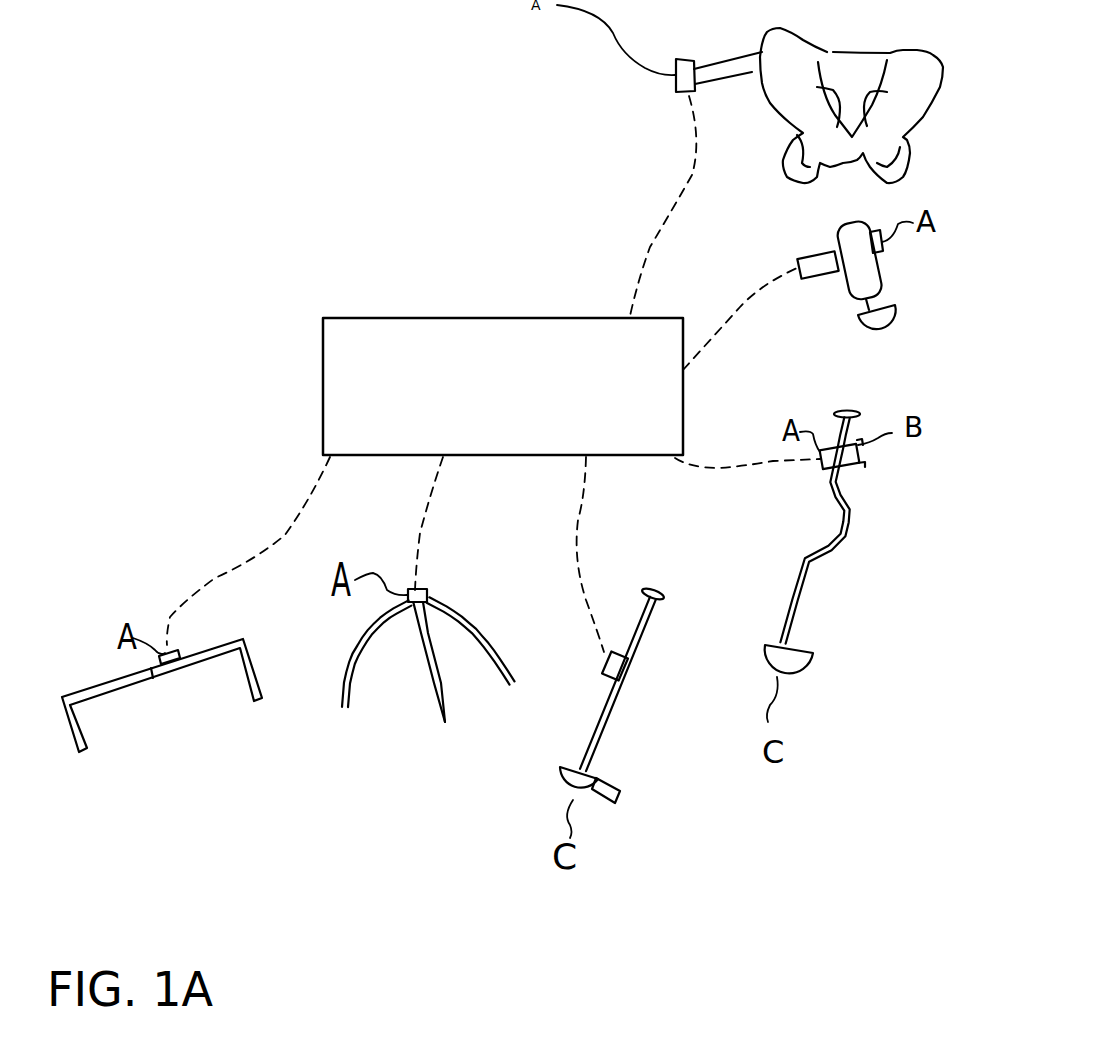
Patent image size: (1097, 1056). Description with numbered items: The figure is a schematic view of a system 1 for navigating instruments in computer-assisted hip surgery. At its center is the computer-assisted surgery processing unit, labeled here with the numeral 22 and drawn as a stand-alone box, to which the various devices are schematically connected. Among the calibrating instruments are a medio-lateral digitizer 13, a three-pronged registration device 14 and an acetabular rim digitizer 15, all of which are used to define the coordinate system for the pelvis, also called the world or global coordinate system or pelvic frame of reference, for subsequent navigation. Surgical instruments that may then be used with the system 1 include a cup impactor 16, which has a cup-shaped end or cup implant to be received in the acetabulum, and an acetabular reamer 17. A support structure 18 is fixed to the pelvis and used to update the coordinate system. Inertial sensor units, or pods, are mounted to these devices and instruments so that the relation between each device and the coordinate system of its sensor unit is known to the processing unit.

The system for navigating instruments 1 is at (200, 361).
The C.A.S. unit 22 is at (315, 340).
The medio-lateral digitizer 13 is at (89, 732).
The three-pronged registration device 14 is at (343, 690).
The acetabular rim digitizer 15 is at (613, 723).
The cup impactor 16 is at (817, 570).
The acetabular reamer 17 is at (883, 263).
The support structure 18 is at (720, 86).